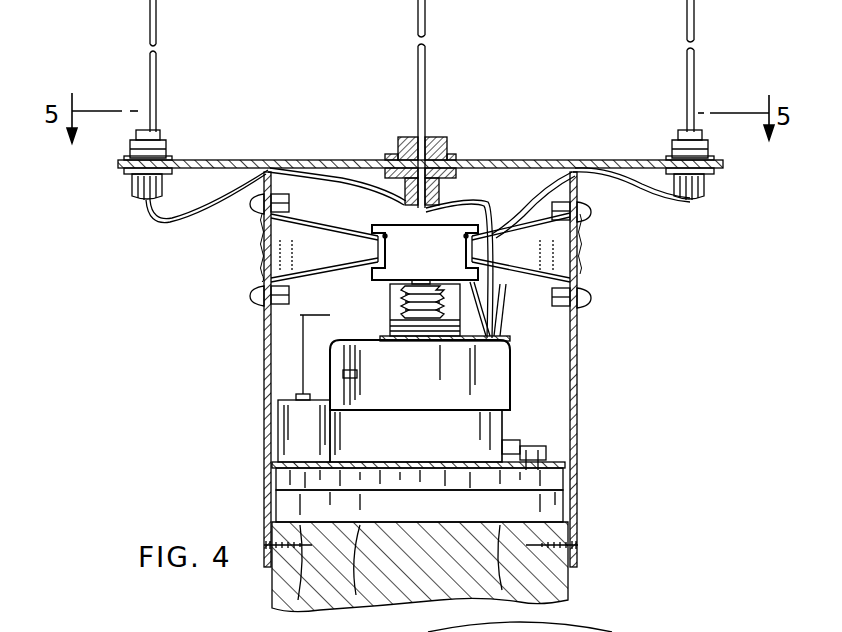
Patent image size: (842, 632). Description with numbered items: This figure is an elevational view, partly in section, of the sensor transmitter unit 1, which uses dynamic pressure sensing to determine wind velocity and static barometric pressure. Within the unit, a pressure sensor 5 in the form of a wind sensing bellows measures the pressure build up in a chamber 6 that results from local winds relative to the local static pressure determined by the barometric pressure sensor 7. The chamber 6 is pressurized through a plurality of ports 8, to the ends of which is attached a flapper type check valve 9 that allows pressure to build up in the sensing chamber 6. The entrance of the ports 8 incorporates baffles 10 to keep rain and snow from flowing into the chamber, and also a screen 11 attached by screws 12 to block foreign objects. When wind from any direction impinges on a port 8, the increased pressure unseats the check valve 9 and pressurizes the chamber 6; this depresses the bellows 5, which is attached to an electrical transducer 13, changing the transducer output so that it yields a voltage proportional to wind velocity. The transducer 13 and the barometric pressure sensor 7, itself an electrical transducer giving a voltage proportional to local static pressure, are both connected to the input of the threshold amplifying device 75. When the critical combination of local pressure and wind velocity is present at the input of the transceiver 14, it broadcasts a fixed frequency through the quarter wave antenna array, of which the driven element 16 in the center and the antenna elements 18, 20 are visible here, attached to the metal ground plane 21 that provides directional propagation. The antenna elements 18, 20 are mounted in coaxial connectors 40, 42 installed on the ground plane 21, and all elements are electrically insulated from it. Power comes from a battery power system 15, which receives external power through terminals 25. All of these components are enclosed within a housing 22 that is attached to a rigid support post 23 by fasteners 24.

The sensor transmitter unit 1 is at (459, 369).
The pressure sensor 5 is at (390, 292).
The chamber 6 is at (406, 224).
The barometric pressure sensor 7 is at (289, 428).
The ports 8 is at (565, 238).
The flapper type check valve 9 is at (466, 236).
The baffles 10 is at (272, 232).
The screen 11 is at (268, 258).
The screws 12 is at (258, 306).
The electrical transducer 13 is at (402, 309).
The transceiver 14 is at (474, 385).
The battery power system 15 is at (490, 428).
The driven element 16 is at (428, 82).
The antenna element 18 is at (697, 90).
The antenna element 20 is at (160, 80).
The ground plane 21 is at (233, 160).
The housing 22 is at (578, 362).
The rigid support post 23 is at (568, 586).
The fasteners 24 is at (572, 545).
The terminals 25 is at (556, 484).
The coaxial connector 40 is at (710, 171).
The coaxial connector 42 is at (136, 188).
The threshold amplifying device 75 is at (365, 365).